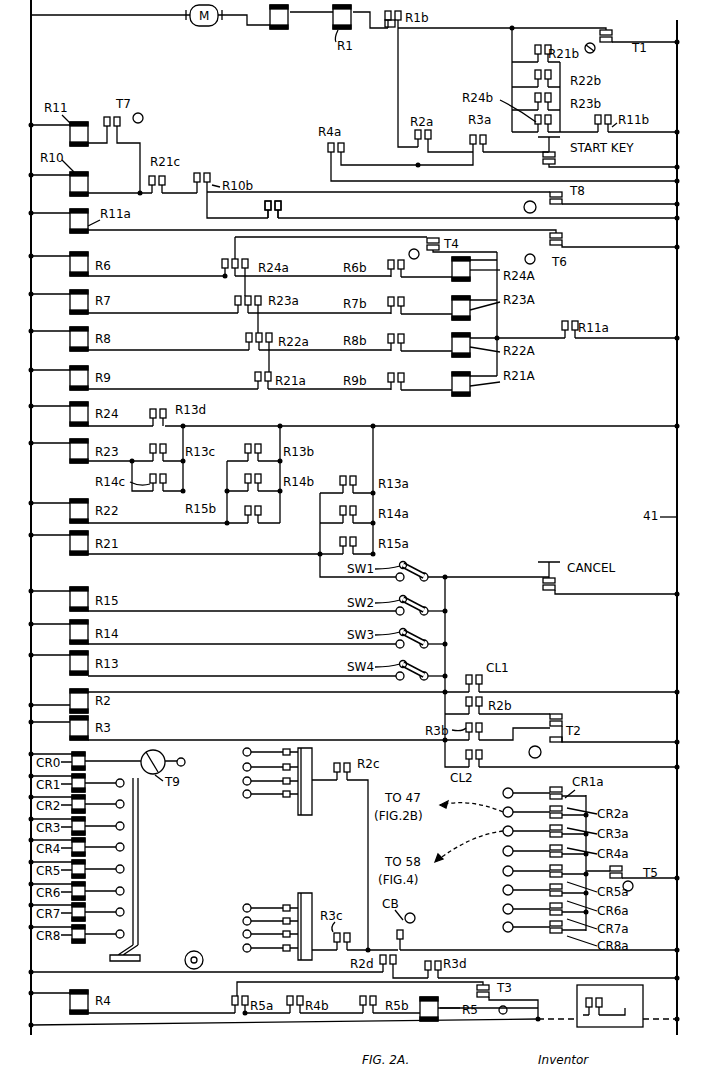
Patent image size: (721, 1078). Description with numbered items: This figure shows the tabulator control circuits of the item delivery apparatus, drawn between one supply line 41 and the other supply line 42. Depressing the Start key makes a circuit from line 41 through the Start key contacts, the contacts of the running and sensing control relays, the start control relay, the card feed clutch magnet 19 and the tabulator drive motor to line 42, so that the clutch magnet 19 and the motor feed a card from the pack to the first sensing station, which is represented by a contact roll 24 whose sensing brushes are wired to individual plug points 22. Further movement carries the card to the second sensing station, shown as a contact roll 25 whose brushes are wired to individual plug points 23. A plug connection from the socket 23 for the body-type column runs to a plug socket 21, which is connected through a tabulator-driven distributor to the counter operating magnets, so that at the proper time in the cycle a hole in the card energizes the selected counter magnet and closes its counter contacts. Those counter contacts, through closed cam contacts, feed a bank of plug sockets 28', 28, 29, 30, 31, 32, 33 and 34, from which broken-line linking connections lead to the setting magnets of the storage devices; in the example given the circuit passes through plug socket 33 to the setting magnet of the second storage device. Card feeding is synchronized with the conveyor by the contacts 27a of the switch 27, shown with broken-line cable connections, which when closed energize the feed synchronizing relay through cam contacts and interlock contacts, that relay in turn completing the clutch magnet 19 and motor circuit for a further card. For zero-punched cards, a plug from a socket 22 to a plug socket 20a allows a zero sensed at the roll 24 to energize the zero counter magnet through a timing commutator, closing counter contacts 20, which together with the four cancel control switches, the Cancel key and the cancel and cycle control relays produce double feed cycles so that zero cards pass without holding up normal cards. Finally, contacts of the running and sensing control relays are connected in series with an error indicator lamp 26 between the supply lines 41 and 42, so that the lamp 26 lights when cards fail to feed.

The feed clutch magnet 19 is at (270, 32).
The counter contacts 20 is at (281, 206).
The plug socket 20a is at (185, 759).
The plug socket 21 is at (138, 862).
The plug points 22 is at (243, 752).
The plug points 23 is at (243, 948).
The contact roll 24 is at (312, 810).
The contact roll 25 is at (298, 893).
The error indicator lamp 26 is at (184, 960).
The switch 27 is at (640, 1027).
The contacts 27a is at (600, 998).
The plug socket 28 is at (490, 910).
The plug socket 28' is at (489, 928).
The plug socket 29 is at (503, 890).
The plug socket 30 is at (503, 871).
The plug socket 31 is at (503, 851).
The plug socket 32 is at (503, 831).
The plug socket 33 is at (503, 812).
The plug socket 34 is at (503, 793).
The supply line 41 is at (677, 517).
The supply line 42 is at (31, 50).